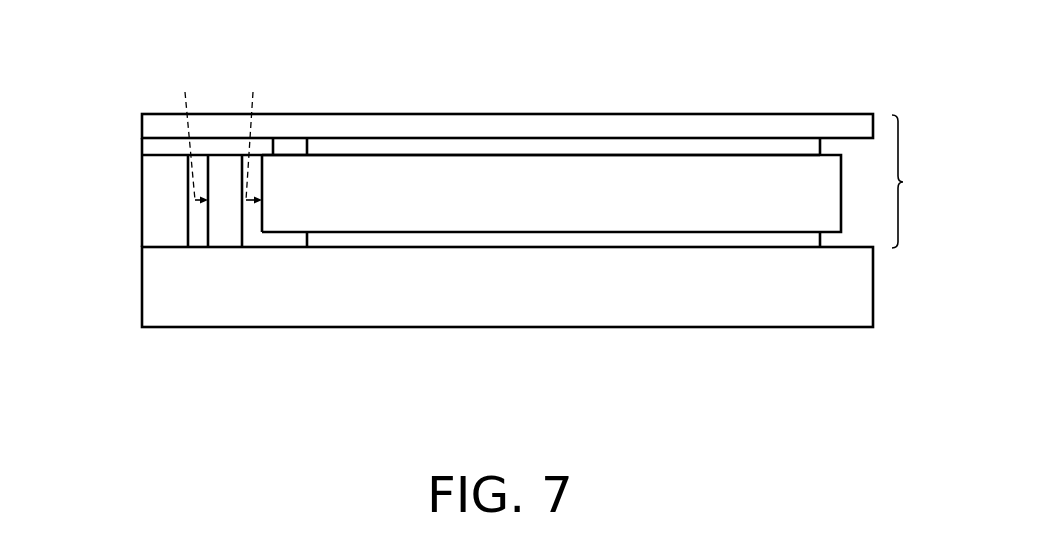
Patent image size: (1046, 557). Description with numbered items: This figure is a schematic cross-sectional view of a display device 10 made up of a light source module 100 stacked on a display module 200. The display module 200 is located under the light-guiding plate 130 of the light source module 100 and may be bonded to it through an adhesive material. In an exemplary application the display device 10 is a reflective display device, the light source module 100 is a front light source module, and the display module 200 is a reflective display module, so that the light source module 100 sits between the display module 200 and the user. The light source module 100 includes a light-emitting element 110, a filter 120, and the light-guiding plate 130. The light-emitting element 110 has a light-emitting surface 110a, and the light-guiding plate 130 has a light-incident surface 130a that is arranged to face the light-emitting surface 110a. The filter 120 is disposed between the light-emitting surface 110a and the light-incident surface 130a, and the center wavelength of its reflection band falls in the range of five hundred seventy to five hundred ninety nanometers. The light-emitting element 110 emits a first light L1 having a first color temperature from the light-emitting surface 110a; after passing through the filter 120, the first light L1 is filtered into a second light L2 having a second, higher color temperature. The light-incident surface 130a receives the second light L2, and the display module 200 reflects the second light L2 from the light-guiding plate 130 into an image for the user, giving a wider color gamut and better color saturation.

The display device 10 is at (898, 417).
The light source module 100 is at (920, 181).
The light-emitting element 110 is at (158, 203).
The light-emitting surface 110a is at (187, 227).
The filter 120 is at (227, 175).
The light-guiding plate 130 is at (409, 177).
The light-incident surface 130a is at (259, 168).
The display module 200 is at (158, 315).
The first light L1 is at (188, 130).
The second light L2 is at (255, 130).